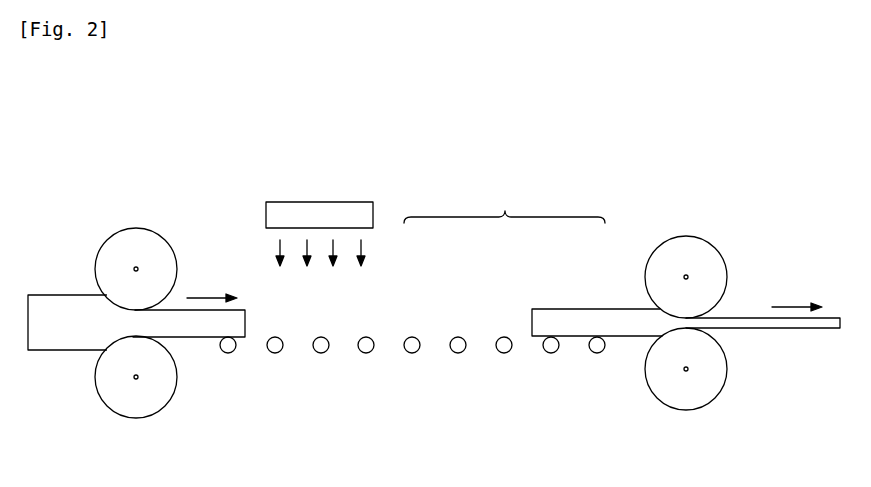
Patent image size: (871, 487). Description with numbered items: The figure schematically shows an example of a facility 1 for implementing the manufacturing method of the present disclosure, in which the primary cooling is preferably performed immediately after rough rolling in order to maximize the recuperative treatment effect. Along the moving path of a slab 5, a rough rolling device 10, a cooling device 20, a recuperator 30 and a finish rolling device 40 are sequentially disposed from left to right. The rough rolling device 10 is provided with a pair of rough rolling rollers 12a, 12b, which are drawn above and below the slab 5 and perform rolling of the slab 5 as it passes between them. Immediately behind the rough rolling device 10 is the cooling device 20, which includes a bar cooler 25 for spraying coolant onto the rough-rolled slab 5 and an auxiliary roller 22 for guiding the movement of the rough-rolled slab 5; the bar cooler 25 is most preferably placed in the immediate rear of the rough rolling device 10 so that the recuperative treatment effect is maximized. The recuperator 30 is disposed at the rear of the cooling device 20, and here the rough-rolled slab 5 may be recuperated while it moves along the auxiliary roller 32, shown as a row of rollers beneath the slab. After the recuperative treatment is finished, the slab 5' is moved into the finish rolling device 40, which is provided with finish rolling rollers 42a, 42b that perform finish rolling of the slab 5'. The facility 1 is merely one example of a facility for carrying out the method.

The facility 1 is at (261, 96).
The slab 5 is at (136, 353).
The slab after recuperative treatment 5' is at (686, 298).
The rough rolling device 10 is at (145, 205).
The rough rolling roller 12a is at (108, 253).
The rough rolling roller 12b is at (125, 418).
The cooling device 20 is at (324, 142).
The auxiliary roller 22 is at (229, 352).
The bar cooler 25 is at (360, 210).
The recuperator 30 is at (519, 205).
The auxiliary roller 32 is at (412, 352).
The finish rolling device 40 is at (725, 198).
The finish rolling roller 42a is at (714, 264).
The finish rolling roller 42b is at (714, 380).